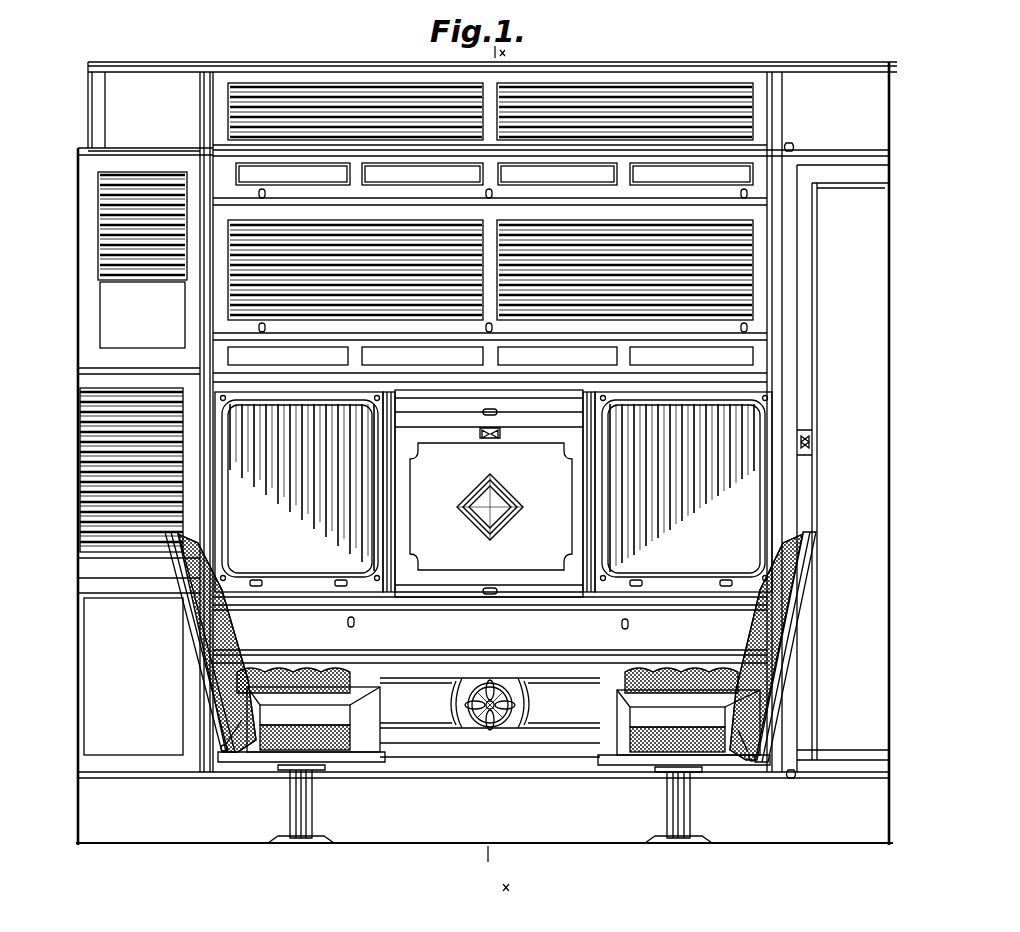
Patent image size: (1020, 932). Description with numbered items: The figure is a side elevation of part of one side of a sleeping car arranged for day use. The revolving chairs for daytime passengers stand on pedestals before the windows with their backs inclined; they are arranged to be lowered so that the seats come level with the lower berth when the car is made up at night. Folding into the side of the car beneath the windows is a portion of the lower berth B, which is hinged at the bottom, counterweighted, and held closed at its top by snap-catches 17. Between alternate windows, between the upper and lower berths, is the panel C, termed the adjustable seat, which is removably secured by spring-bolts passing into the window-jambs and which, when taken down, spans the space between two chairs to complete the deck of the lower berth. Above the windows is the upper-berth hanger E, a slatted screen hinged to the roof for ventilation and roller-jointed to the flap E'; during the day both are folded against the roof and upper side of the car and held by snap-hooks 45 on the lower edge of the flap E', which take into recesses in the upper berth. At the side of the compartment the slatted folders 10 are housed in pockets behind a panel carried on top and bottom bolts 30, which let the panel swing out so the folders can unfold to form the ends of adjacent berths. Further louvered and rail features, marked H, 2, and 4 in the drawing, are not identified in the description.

The upper rail of central panel 2 is at (434, 419).
The window sill rail 4 is at (440, 590).
The folder 10 is at (139, 463).
The snap-catch 17 is at (496, 625).
The bolt 30 is at (786, 150).
The snap-hook 45 is at (266, 193).
The lower berth B is at (490, 646).
The adjustable seat panel C is at (489, 493).
The upper-berth hanger E is at (490, 111).
The flap E' is at (494, 174).
The lower louver H is at (490, 270).